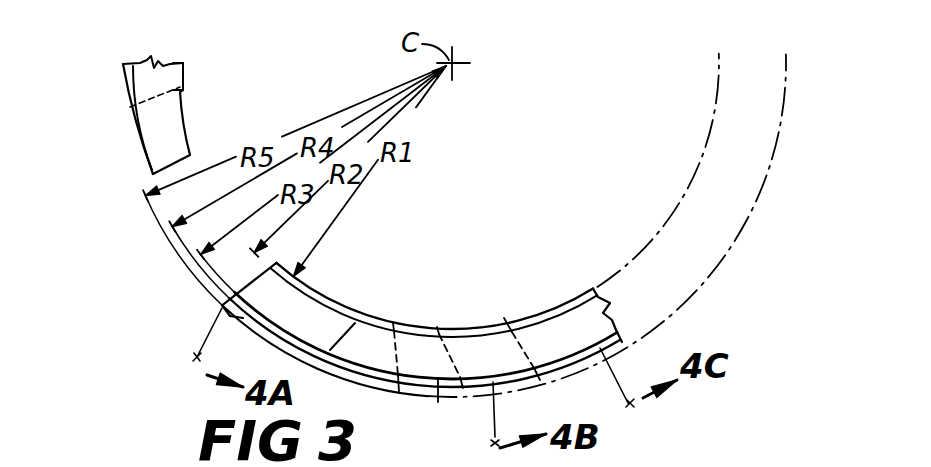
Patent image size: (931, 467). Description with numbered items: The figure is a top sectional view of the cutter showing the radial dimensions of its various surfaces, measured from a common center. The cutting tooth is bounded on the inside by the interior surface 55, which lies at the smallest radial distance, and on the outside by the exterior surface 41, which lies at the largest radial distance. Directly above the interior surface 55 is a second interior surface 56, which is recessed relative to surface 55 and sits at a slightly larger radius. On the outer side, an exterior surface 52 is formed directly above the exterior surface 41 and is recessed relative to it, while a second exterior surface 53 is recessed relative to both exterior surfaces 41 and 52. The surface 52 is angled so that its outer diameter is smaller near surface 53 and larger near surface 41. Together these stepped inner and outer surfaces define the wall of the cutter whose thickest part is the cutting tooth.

The exterior surface 41 is at (358, 387).
The exterior surface 52 is at (123, 78).
The second exterior surface 53 is at (135, 98).
The interior surface 55 is at (183, 80).
The second interior surface 56 is at (180, 70).